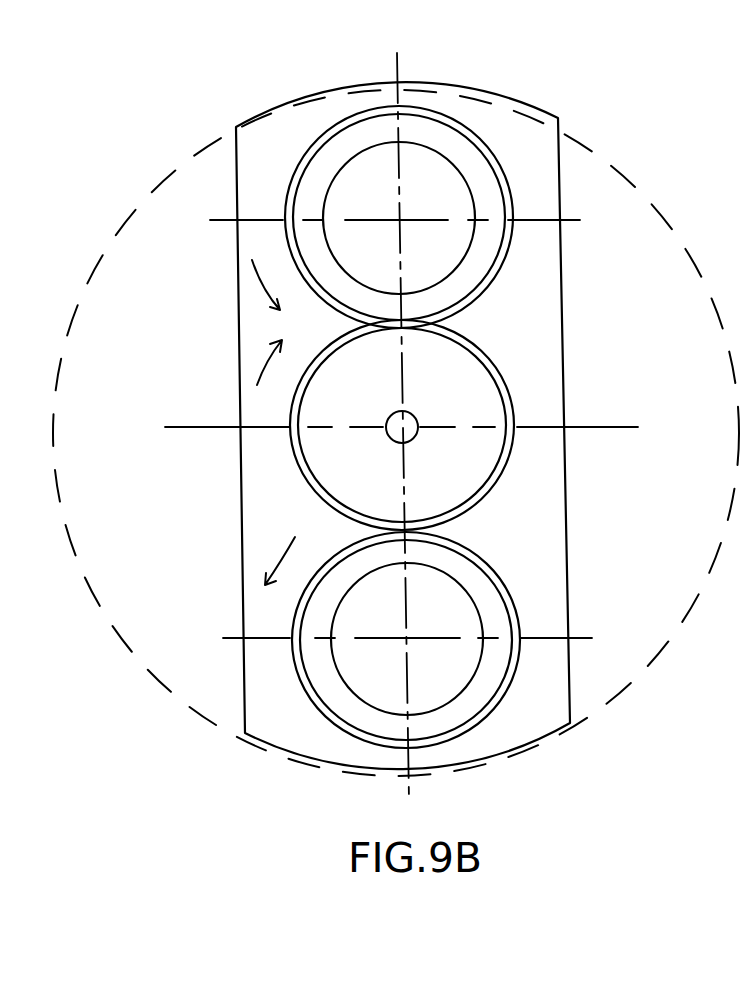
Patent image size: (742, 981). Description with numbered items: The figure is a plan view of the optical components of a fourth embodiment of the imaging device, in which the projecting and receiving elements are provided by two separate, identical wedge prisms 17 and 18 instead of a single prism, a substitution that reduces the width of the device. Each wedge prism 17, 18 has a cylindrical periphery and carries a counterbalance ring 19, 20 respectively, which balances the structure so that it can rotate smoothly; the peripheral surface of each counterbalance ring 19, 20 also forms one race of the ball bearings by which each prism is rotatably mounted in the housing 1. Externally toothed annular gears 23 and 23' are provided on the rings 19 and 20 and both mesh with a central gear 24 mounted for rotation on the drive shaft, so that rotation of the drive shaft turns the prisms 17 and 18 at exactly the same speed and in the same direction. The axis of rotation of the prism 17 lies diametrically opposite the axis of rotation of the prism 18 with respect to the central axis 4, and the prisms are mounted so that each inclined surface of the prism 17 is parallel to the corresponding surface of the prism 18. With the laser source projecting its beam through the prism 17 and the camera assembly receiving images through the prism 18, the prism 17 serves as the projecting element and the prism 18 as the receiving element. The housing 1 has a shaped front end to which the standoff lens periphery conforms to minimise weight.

The housing 1 is at (528, 352).
The axis 4 is at (410, 419).
The wedge prism 17 is at (435, 167).
The wedge prism 18 is at (458, 610).
The counterbalance ring 19 is at (337, 143).
The counterbalance ring 20 is at (493, 667).
The externally toothed annular gear 23 is at (372, 217).
The externally toothed annular gear 23' is at (385, 639).
The central gear 24 is at (298, 460).